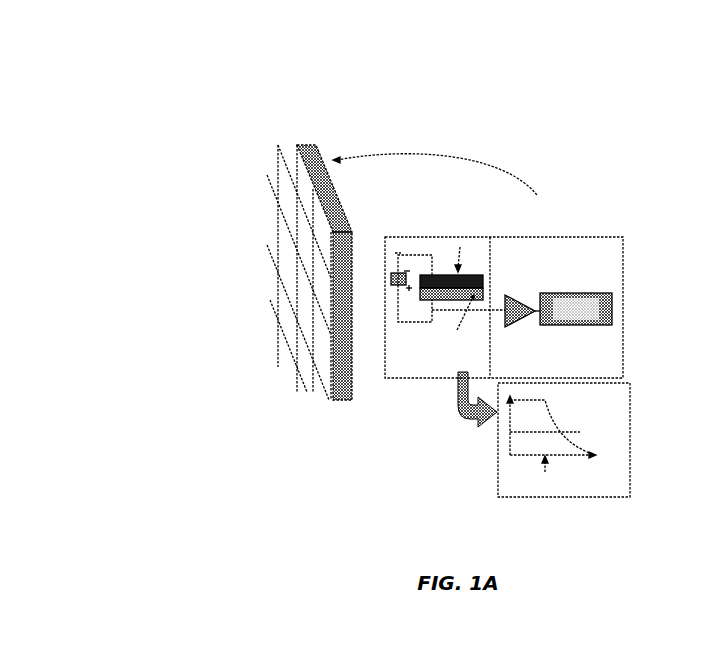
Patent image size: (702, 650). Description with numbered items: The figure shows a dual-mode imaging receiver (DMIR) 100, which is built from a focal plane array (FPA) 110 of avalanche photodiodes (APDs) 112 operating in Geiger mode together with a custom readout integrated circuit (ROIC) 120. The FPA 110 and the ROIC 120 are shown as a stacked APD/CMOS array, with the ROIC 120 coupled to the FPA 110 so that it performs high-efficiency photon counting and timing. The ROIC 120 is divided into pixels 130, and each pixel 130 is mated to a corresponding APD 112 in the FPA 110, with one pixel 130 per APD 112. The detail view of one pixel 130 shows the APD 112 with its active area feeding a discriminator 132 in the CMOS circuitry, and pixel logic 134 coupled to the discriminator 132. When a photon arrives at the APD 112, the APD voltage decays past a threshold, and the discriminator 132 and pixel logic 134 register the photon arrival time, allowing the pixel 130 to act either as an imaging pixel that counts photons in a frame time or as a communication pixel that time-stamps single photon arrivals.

The dual-mode imaging receiver (DMIR) 100 is at (232, 387).
The focal plane array (FPA) 110 is at (319, 297).
The avalanche photodiode (APD) 112 is at (350, 213).
The readout integrated circuit (ROIC) 120 is at (308, 143).
The pixel 130 is at (602, 170).
The discriminator 132 is at (535, 292).
The pixel logic 134 is at (576, 321).